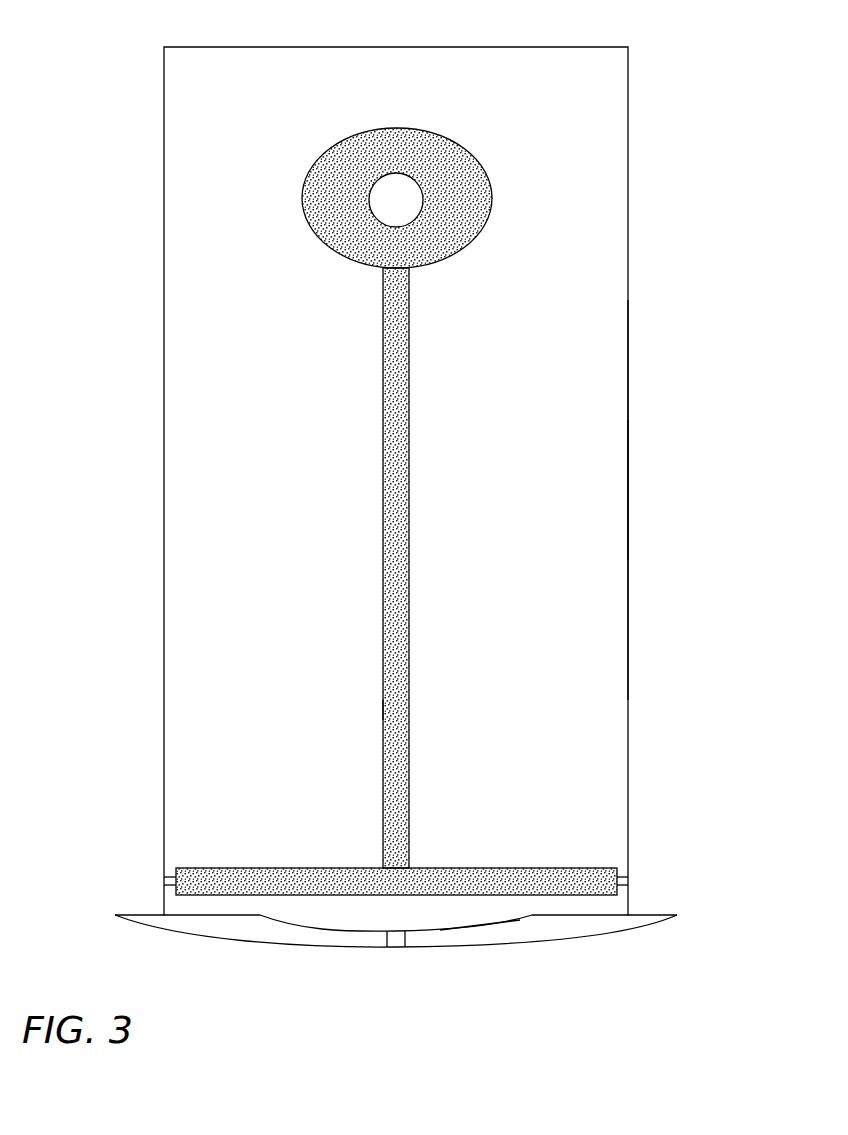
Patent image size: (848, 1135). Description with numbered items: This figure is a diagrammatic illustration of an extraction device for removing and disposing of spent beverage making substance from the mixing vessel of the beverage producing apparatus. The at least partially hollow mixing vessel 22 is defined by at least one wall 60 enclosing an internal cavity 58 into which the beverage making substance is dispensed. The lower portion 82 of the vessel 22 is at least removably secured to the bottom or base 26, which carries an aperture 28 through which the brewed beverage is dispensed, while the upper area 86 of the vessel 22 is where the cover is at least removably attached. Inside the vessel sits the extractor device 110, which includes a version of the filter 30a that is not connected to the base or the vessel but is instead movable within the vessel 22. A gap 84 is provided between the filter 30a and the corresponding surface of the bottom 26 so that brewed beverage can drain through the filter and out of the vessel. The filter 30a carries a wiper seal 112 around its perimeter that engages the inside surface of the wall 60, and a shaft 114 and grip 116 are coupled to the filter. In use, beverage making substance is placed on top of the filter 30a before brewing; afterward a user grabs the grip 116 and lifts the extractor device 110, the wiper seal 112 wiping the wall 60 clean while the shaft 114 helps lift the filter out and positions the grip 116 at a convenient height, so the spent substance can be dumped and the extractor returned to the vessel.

The mixing vessel 22 is at (640, 482).
The bottom 26 is at (643, 925).
The aperture 28 is at (394, 940).
The filter 30a is at (247, 858).
The internal cavity 58 is at (538, 450).
The wall 60 is at (628, 573).
The lower portion 82 is at (660, 880).
The gap 84 is at (485, 905).
The upper area 86 is at (158, 70).
The extractor device 110 is at (348, 710).
The wiper seal 112 is at (172, 875).
The shaft 114 is at (383, 624).
The grip 116 is at (303, 199).